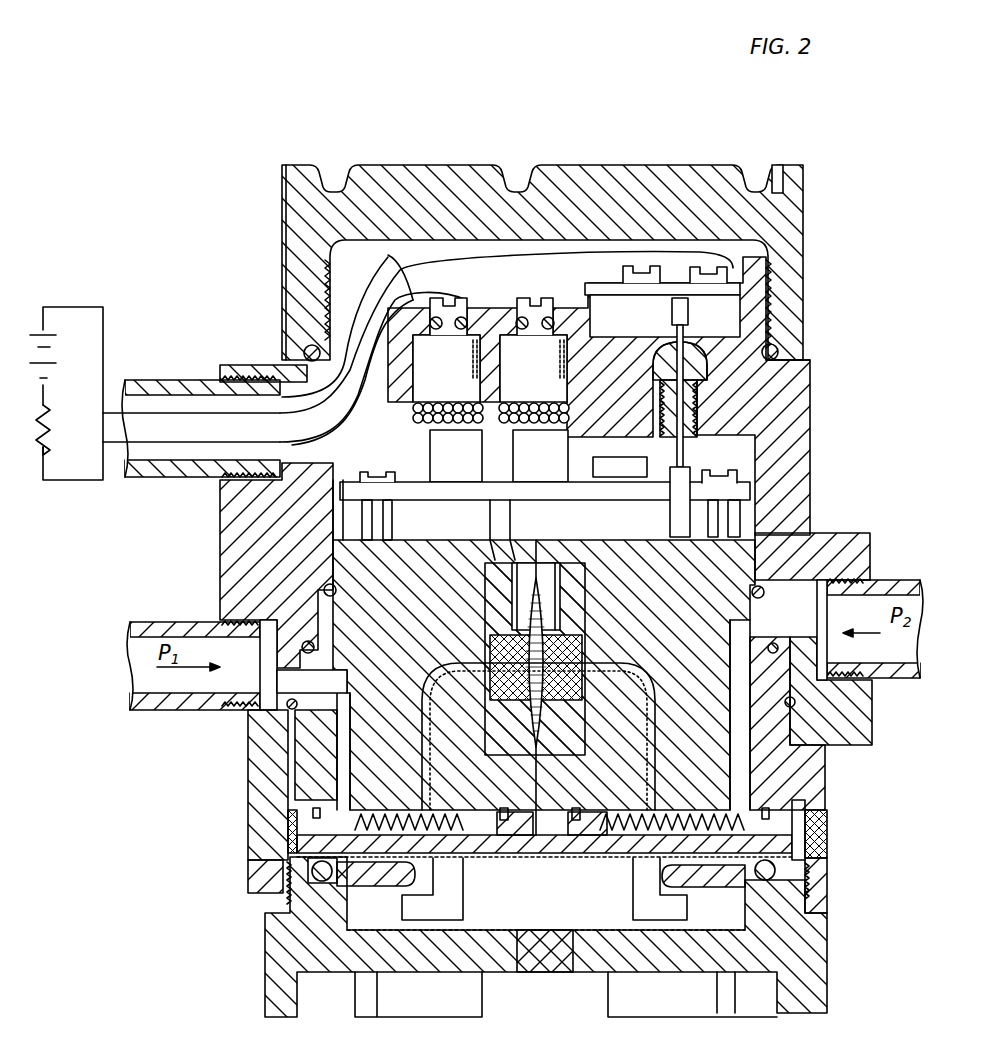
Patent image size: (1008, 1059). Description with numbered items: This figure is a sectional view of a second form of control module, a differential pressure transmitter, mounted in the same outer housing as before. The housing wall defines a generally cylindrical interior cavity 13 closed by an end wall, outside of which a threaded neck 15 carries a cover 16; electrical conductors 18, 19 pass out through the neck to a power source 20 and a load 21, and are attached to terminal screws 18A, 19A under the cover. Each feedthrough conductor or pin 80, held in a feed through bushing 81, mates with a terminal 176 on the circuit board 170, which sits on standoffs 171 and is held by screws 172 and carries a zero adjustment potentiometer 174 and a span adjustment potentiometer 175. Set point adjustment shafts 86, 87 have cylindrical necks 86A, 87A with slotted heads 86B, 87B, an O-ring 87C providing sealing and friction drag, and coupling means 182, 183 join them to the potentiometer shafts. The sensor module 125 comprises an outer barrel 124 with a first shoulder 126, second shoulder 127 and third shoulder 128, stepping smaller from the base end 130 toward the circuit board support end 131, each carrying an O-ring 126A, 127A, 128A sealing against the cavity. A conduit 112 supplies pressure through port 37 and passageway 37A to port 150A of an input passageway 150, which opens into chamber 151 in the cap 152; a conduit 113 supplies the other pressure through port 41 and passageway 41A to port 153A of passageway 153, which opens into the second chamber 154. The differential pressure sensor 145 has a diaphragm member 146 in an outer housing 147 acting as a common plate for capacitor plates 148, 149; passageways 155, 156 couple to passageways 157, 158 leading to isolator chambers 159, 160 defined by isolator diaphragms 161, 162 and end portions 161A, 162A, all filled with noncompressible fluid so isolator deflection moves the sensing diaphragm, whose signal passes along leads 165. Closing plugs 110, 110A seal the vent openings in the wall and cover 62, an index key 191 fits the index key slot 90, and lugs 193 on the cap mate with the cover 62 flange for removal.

The interior cavity 13 is at (805, 415).
The threaded neck 15 is at (755, 268).
The cover 16 is at (780, 207).
The electrical conductor 18 is at (175, 415).
The terminal screw 18A is at (693, 278).
The electrical conductor 19 is at (145, 440).
The terminal screw 19A is at (657, 268).
The power source 20 is at (53, 333).
The load 21 is at (47, 430).
The port 37 is at (817, 632).
The passageway 37A is at (816, 625).
The port 41 is at (262, 625).
The passageway 41A is at (258, 680).
The cover 62 is at (823, 937).
The conductor or pin 80 is at (698, 348).
The feed through bushing 81 is at (812, 378).
The set point adjustment shaft 86 is at (544, 389).
The cylindrical neck 86A is at (514, 345).
The slotted head 86B is at (546, 298).
The set point adjustment shaft 87 is at (458, 389).
The cylindrical neck 87A is at (444, 334).
The slotted head 87B is at (388, 257).
The O-ring 87C is at (470, 318).
The index key slot 90 is at (295, 855).
The closing plug 110 is at (827, 827).
The closing plug 110A is at (545, 973).
The conduit 112 is at (898, 680).
The conduit 113 is at (148, 617).
The outer barrel 124 is at (717, 740).
The sensor module 125 is at (335, 772).
The first shoulder 126 is at (288, 708).
The O-ring 126A is at (278, 684).
The second shoulder 127 is at (305, 652).
The O-ring 127A is at (315, 645).
The third shoulder 128 is at (330, 592).
The O-ring 128A is at (333, 585).
The base end 130 is at (547, 822).
The circuit board support end 131 is at (642, 540).
The differential pressure sensor 145 is at (480, 590).
The diaphragm member 146 is at (485, 592).
The outer housing 147 is at (585, 605).
The capacitor plate 148 is at (560, 645).
The capacitor plate 149 is at (500, 650).
The input passageway 150 is at (752, 612).
The port 150A is at (797, 610).
The chamber 151 is at (740, 825).
The cap 152 is at (787, 843).
The passageway 153 is at (288, 835).
The port 153A is at (305, 750).
The second chamber 154 is at (343, 823).
The passageway 155 is at (507, 705).
The passageway 156 is at (557, 678).
The passageway 157 is at (343, 735).
The passageway 158 is at (660, 695).
The isolator chamber 159 is at (407, 808).
The isolator chamber 160 is at (723, 805).
The isolator diaphragm 161 is at (440, 810).
The end portion 161A is at (504, 825).
The isolator diaphragm 162 is at (742, 808).
The end portion 162A is at (572, 835).
The leads 165 is at (497, 560).
The circuit board 170 is at (433, 500).
The standoff 171 is at (288, 462).
The screw 172 is at (390, 470).
The zero adjustment potentiometer 174 is at (557, 452).
The span adjustment potentiometer 175 is at (475, 455).
The terminal 176 is at (681, 490).
The coupling means 182 is at (568, 413).
The coupling means 183 is at (350, 413).
The index key 191 is at (310, 872).
The lug 193 is at (455, 908).